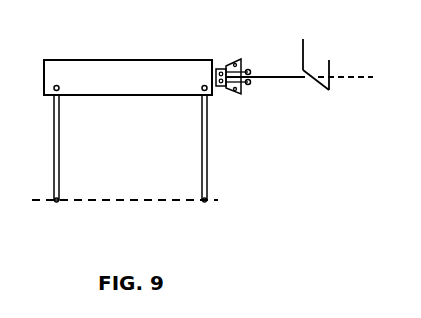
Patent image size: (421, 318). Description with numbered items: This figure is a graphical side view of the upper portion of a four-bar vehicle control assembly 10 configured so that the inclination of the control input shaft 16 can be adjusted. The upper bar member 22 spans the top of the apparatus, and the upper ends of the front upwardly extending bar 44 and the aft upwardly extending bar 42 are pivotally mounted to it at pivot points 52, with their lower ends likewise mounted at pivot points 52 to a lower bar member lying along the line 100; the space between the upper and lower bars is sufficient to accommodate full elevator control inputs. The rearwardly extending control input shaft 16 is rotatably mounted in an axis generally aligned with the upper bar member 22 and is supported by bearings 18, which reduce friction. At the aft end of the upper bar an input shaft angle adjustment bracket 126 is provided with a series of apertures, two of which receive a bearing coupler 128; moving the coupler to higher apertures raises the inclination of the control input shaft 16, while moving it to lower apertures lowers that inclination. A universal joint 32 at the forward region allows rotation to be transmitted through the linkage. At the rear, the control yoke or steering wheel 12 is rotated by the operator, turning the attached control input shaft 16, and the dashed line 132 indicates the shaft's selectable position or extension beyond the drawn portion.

The assembly 10 is at (53, 33).
The upper bar member 22 is at (115, 60).
The front upwardly extending bar 44 is at (53, 152).
The aft upwardly extending bar 42 is at (201, 152).
The pivot point 52 is at (59, 96).
The support surface 100 is at (143, 201).
The input shaft angle adjustment bracket 126 is at (226, 68).
The universal joint 32 is at (224, 61).
The bearing 18 is at (250, 70).
The bearing coupler 128 is at (246, 84).
The control input shaft 16 is at (273, 78).
The control yoke/steering wheel 12 is at (330, 67).
The mounting line 132 is at (356, 78).